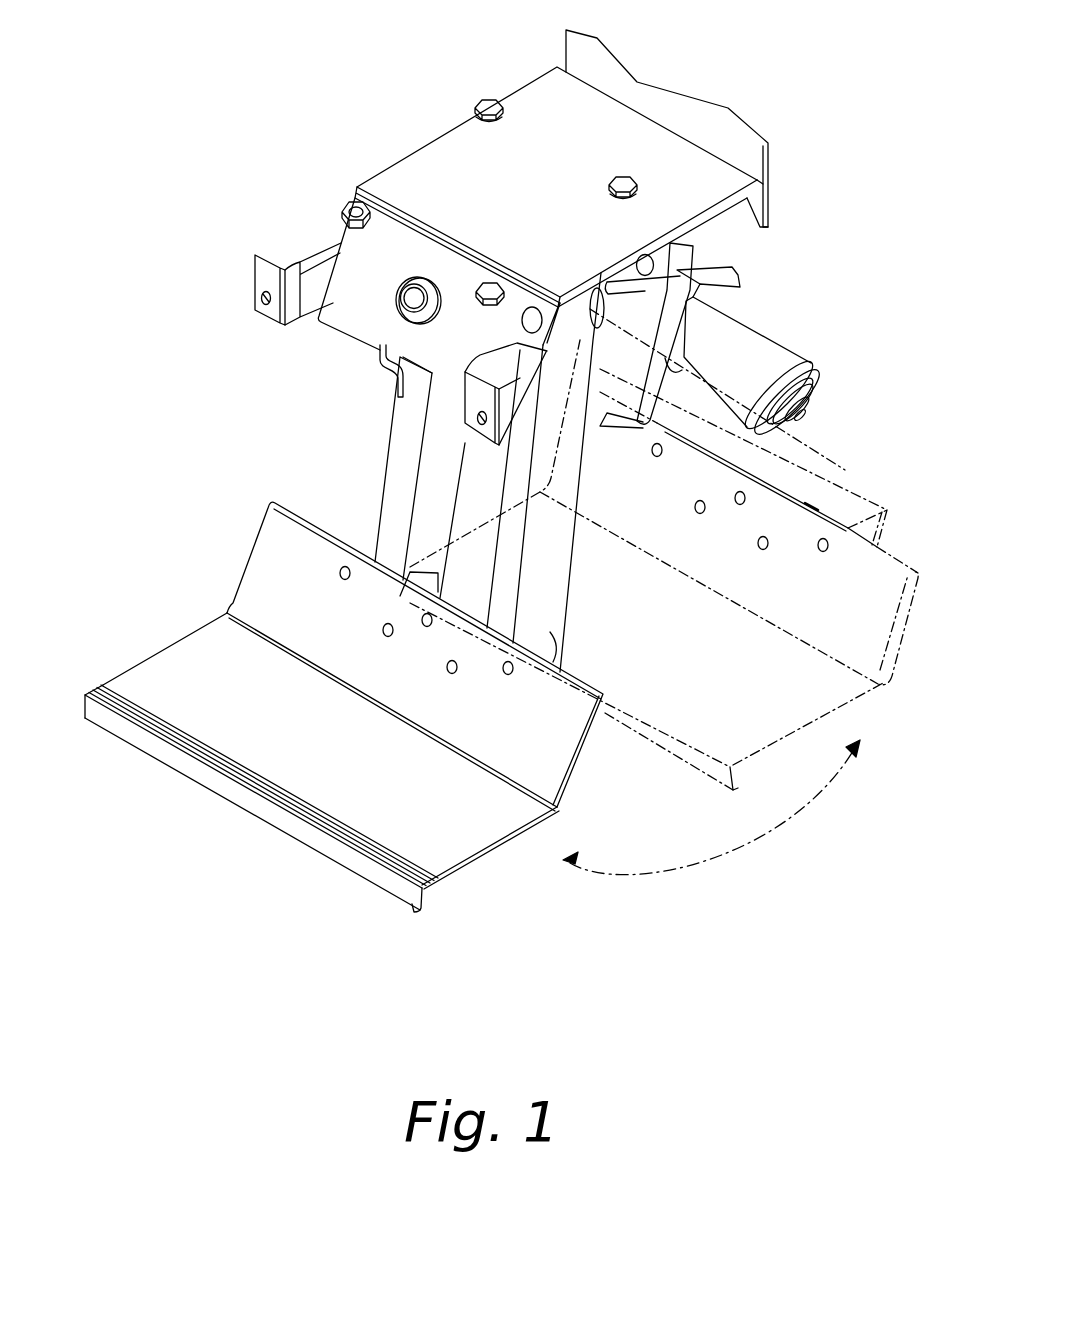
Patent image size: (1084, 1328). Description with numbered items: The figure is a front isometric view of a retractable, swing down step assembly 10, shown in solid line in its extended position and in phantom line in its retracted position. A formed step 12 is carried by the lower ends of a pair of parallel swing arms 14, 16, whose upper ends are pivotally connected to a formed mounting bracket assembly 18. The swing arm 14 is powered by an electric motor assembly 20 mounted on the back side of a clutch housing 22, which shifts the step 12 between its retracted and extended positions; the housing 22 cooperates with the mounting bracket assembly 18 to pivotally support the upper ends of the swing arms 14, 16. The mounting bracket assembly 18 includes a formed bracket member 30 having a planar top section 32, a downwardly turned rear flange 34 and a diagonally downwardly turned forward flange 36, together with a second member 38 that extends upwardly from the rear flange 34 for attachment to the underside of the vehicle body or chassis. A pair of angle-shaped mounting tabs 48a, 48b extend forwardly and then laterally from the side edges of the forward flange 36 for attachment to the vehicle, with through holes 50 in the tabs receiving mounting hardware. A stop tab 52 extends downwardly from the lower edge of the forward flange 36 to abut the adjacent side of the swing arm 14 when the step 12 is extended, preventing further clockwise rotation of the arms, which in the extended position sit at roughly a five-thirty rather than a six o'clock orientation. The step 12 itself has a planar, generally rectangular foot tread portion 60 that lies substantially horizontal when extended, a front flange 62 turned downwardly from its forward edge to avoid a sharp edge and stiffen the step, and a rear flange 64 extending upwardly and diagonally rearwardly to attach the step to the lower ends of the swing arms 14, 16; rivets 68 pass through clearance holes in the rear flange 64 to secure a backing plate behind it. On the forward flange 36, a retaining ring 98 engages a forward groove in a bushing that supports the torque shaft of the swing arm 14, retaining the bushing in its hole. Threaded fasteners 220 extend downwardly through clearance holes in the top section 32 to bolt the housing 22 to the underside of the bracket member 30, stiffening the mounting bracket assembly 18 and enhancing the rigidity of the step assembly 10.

The step assembly 10 is at (207, 73).
The formed step 12 is at (182, 635).
The swing arm 14 is at (390, 523).
The swing arm 16 is at (553, 553).
The mounting bracket assembly 18 is at (413, 130).
The electric motor assembly 20 is at (788, 335).
The clutch housing 22 is at (617, 427).
The bracket member 30 is at (445, 123).
The planar top section 32 is at (405, 177).
The rear flange 34 is at (750, 203).
The forward flange 36 is at (382, 250).
The second member 38 is at (575, 50).
The mounting tab 48a is at (262, 275).
The mounting tab 48b is at (477, 398).
The through holes 50 is at (262, 297).
The stop tab 52 is at (393, 385).
The foot tread portion 60 is at (488, 835).
The front flange 62 is at (363, 862).
The rear flange 64 is at (562, 755).
The rivets 68 is at (347, 573).
The retaining ring 98 is at (412, 272).
The threaded fasteners 220 is at (487, 98).